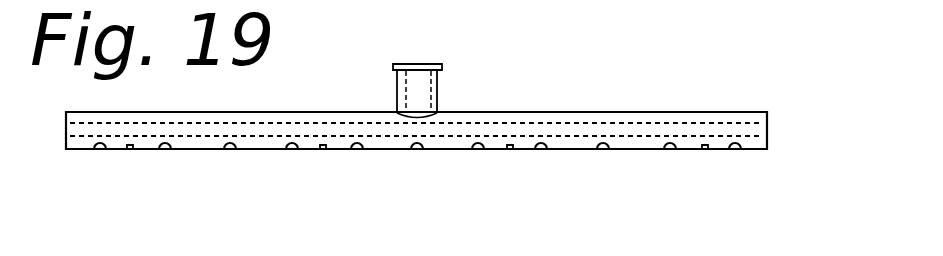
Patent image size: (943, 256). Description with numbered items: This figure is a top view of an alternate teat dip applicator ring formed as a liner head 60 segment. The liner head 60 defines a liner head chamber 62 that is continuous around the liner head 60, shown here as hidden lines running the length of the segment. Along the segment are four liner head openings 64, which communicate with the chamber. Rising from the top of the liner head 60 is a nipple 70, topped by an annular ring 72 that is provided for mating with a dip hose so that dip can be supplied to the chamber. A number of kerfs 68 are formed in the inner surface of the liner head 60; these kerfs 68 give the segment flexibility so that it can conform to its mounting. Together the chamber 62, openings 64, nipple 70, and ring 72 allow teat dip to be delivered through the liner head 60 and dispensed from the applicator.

The liner head 60 is at (632, 120).
The liner head chamber 62 is at (755, 133).
The liner head openings 64 is at (125, 151).
The kerfs 68 is at (293, 149).
The nipple 70 is at (397, 95).
The annular ring 72 is at (437, 63).